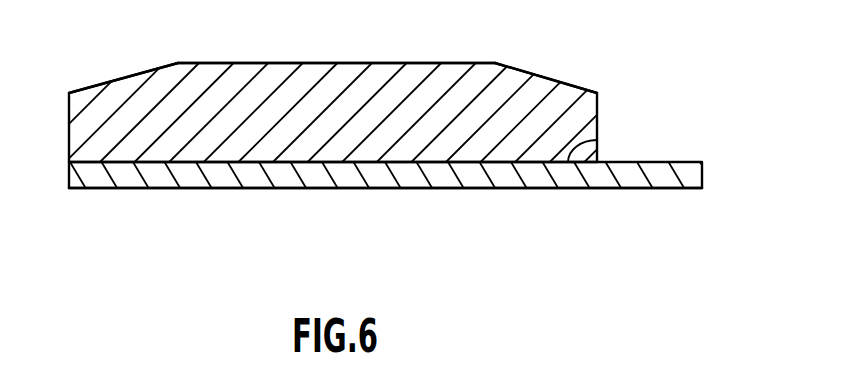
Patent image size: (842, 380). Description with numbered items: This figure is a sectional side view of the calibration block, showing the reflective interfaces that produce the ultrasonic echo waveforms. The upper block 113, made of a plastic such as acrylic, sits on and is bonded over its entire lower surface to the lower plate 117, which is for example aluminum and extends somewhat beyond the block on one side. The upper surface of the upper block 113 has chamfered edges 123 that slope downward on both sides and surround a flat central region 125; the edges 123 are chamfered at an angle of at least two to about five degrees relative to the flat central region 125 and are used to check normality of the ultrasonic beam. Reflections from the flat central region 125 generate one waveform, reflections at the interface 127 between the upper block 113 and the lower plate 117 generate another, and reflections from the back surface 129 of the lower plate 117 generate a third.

The upper block 113 is at (597, 93).
The lower plate 117 is at (699, 173).
The chamfered edges 123 is at (121, 78).
The flat central region 125 is at (386, 63).
The interface 127 is at (598, 143).
The back surface 129 is at (310, 188).